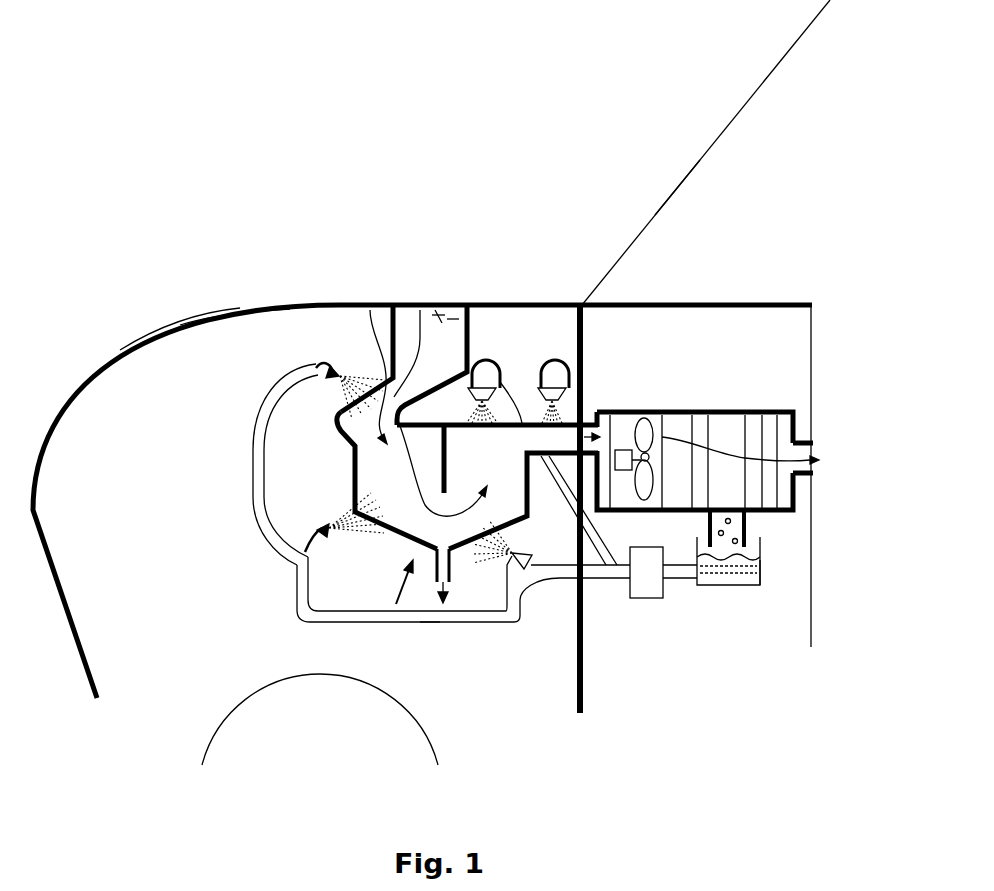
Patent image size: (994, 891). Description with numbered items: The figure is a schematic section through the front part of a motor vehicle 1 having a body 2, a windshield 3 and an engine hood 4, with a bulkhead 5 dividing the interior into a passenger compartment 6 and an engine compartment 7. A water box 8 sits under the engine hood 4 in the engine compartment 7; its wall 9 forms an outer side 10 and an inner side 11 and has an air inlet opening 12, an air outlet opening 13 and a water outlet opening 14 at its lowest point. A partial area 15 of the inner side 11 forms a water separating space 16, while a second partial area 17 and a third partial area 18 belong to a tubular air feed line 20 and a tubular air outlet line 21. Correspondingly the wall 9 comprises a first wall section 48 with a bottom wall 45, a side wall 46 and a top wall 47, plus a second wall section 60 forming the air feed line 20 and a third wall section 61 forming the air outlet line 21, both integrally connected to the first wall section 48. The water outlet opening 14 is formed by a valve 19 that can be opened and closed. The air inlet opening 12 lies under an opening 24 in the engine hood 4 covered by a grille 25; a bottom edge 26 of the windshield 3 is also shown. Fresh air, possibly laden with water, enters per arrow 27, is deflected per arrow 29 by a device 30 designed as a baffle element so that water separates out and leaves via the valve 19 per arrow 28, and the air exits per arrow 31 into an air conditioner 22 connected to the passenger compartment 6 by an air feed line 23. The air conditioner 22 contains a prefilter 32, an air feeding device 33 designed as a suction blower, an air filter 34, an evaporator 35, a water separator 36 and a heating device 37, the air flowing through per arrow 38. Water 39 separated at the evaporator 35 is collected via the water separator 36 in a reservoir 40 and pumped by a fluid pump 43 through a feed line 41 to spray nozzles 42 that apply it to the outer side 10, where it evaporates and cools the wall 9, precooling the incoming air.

The motor vehicle 1 is at (134, 284).
The body 2 is at (122, 347).
The windshield 3 is at (714, 133).
The engine hood 4 is at (173, 316).
The bulkhead 5 is at (585, 690).
The passenger compartment 6 is at (698, 235).
The engine compartment 7 is at (218, 334).
The water box 8 is at (410, 600).
The wall 9 is at (467, 305).
The outer side 10 is at (382, 303).
The inner side 11 is at (458, 318).
The air inlet opening 12 is at (438, 320).
The air outlet opening 13 is at (617, 430).
The water outlet opening 14 is at (460, 627).
The partial area 15 is at (309, 553).
The water separating space 16 is at (380, 477).
The partial area 17 is at (338, 417).
The partial area 18 is at (538, 370).
The valve 19 is at (452, 593).
The air feed line 20 is at (368, 340).
The air outlet line 21 is at (584, 400).
The air conditioner 22 is at (762, 579).
The air feed line 23 is at (808, 437).
The opening 24 is at (403, 303).
The grille 25 is at (442, 318).
The bottom edge 26 is at (579, 303).
The arrow 27 is at (393, 303).
The arrow 28 is at (430, 627).
The arrow 29 is at (380, 462).
The device 30 is at (360, 623).
The arrow 31 is at (600, 430).
The prefilter 32 is at (603, 575).
The air feeding device 33 is at (645, 500).
The air filter 34 is at (683, 427).
The evaporator 35 is at (728, 427).
The water separator 36 is at (707, 516).
The heating device 37 is at (765, 428).
The arrow 38 is at (807, 474).
The water 39 is at (348, 372).
The reservoir 40 is at (760, 585).
The feed line 41 is at (541, 607).
The spray nozzles 42 is at (332, 362).
The fluid pump 43 is at (648, 600).
The bottom wall 45 is at (394, 531).
The side wall 46 is at (358, 494).
The top wall 47 is at (484, 427).
The spray region 48 is at (505, 552).
The second wall section 60 is at (375, 347).
The third wall section 61 is at (568, 506).